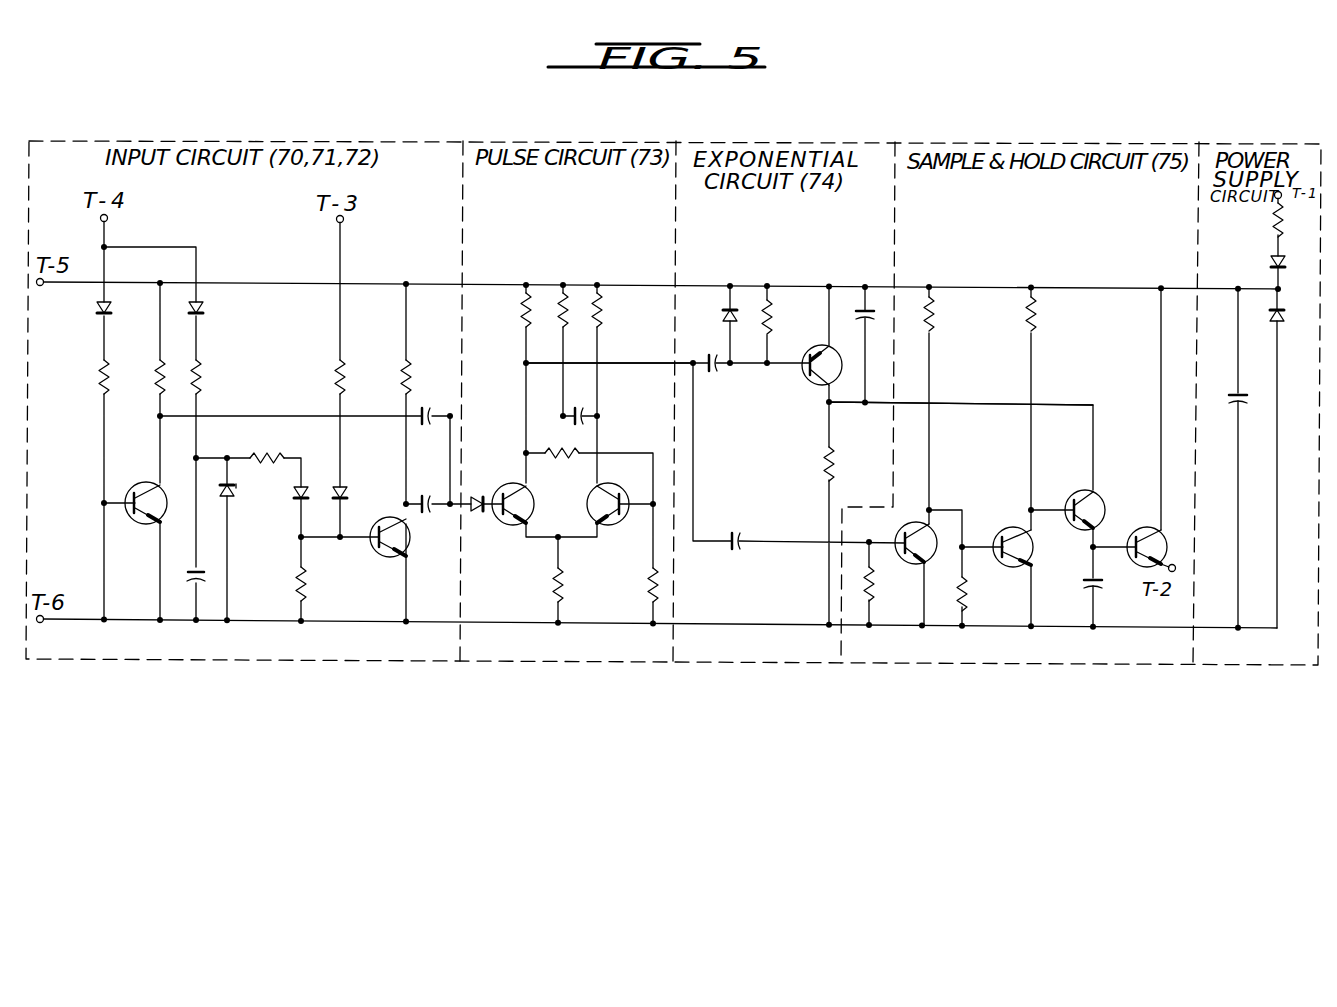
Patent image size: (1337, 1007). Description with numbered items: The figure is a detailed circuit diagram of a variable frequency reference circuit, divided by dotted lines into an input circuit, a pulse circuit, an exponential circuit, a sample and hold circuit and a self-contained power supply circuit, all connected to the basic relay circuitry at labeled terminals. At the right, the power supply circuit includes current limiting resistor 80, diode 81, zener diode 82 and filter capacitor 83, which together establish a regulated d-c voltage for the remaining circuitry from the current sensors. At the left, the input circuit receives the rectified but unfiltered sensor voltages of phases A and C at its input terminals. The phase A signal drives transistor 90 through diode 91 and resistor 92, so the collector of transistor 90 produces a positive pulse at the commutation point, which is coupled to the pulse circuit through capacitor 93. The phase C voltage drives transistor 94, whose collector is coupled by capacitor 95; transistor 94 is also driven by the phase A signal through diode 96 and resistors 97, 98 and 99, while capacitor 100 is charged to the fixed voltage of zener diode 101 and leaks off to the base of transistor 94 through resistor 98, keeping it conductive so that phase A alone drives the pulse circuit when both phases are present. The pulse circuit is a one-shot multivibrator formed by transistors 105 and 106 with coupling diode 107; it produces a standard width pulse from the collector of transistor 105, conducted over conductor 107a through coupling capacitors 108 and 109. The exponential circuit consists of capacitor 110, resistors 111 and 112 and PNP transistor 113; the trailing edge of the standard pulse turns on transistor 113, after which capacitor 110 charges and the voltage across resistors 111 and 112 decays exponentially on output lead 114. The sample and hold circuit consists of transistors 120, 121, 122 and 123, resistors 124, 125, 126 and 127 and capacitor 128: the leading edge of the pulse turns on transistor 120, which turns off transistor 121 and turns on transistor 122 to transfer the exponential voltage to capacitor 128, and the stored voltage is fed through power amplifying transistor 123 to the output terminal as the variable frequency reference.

The current limiting resistor 80 is at (1270, 215).
The diode 81 is at (1268, 262).
The zener diode 82 is at (1282, 320).
The filter capacitor 83 is at (1228, 410).
The transistor 90 is at (145, 482).
The diode 91 is at (97, 310).
The resistor 92 is at (99, 374).
The capacitor 93 is at (430, 408).
The transistor 94 is at (378, 554).
The capacitor 95 is at (427, 515).
The diode 96 is at (207, 309).
The resistor 97 is at (206, 374).
The resistor 98 is at (264, 453).
The resistor 99 is at (293, 494).
The capacitor 100 is at (221, 566).
The zener diode 101 is at (233, 508).
The transistor 105 is at (507, 525).
The transistor 106 is at (620, 530).
The coupling diode 107 is at (476, 494).
The conductor 107a is at (668, 363).
The coupling capacitor 108 is at (714, 373).
The coupling capacitor 109 is at (742, 525).
The capacitor 110 is at (857, 314).
The resistor 111 is at (822, 457).
The resistor 112 is at (786, 317).
The PNP transistor 113 is at (806, 380).
The output lead 114 is at (992, 400).
The transistor 120 is at (895, 526).
The transistor 121 is at (1009, 526).
The transistor 122 is at (1078, 490).
The power amplifying transistor 123 is at (1146, 527).
The resistor 124 is at (876, 590).
The resistor 125 is at (940, 317).
The resistor 126 is at (968, 592).
The resistor 127 is at (1040, 318).
The capacitor 128 is at (1083, 590).